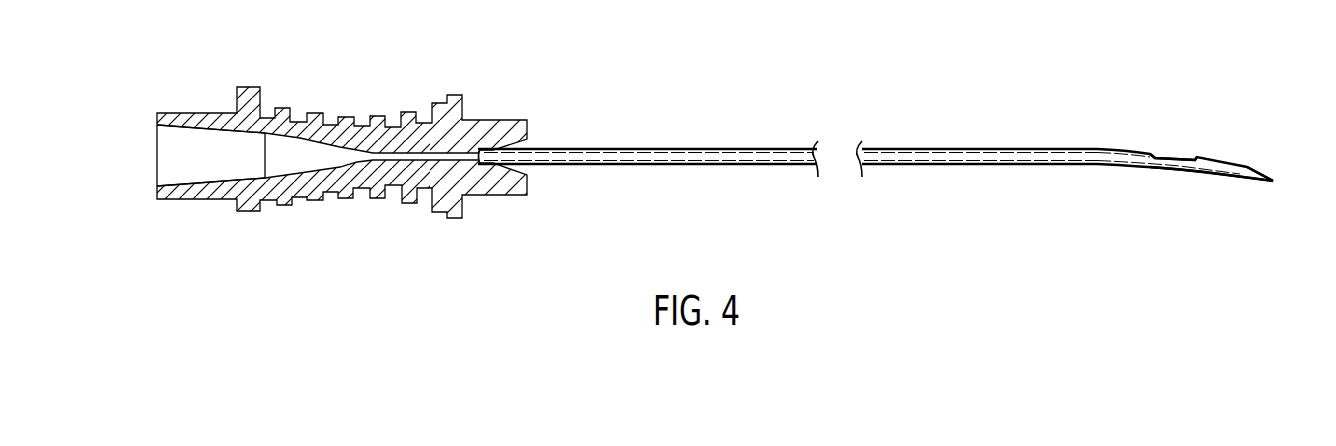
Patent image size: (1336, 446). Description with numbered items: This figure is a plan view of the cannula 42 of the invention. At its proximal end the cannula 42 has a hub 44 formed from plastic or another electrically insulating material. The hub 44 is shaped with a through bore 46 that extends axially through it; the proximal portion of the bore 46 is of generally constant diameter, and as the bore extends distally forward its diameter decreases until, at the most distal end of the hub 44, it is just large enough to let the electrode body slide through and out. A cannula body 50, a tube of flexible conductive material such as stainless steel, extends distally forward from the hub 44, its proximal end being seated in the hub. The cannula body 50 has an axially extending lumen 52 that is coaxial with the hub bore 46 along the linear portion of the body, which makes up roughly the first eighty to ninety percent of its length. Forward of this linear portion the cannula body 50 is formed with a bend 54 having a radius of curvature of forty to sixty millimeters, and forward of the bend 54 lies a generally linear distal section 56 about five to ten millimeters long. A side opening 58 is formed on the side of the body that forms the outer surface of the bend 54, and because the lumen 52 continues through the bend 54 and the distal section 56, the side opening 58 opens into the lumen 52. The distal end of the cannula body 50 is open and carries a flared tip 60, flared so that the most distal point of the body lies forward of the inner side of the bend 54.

The cannula 42 is at (676, 90).
The hub 44 is at (453, 210).
The through bore 46 is at (183, 173).
The cannula body 50 is at (887, 162).
The lumen 52 is at (937, 157).
The bend 54 is at (1177, 170).
The distal section 56 is at (1243, 177).
The side opening 58 is at (1168, 155).
The flared tip 60 is at (1253, 168).